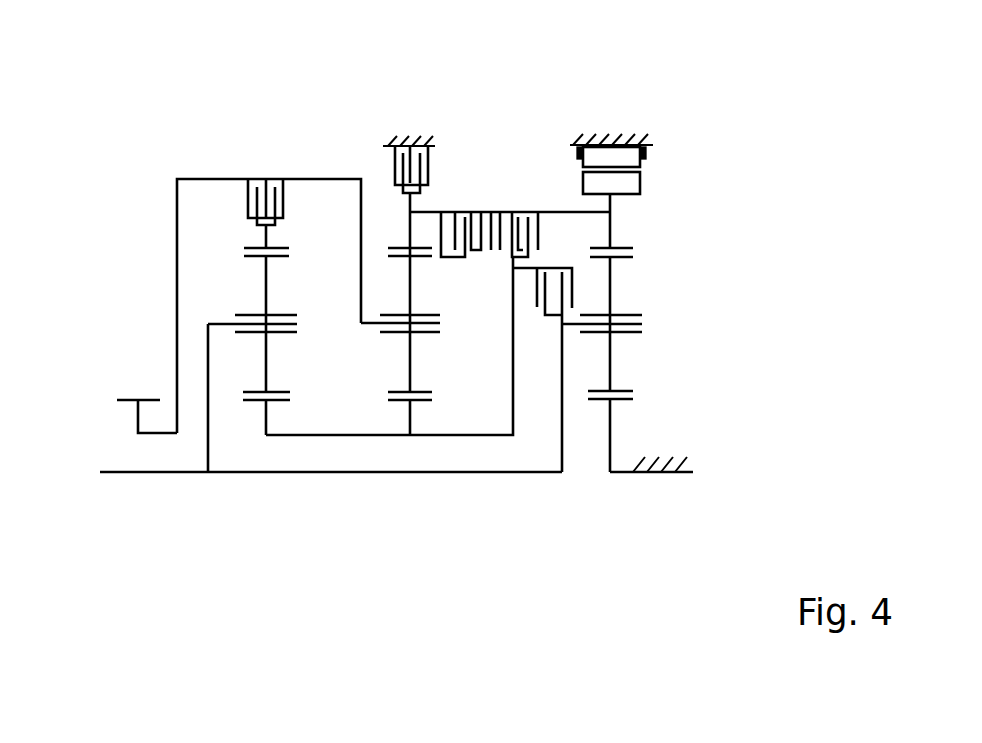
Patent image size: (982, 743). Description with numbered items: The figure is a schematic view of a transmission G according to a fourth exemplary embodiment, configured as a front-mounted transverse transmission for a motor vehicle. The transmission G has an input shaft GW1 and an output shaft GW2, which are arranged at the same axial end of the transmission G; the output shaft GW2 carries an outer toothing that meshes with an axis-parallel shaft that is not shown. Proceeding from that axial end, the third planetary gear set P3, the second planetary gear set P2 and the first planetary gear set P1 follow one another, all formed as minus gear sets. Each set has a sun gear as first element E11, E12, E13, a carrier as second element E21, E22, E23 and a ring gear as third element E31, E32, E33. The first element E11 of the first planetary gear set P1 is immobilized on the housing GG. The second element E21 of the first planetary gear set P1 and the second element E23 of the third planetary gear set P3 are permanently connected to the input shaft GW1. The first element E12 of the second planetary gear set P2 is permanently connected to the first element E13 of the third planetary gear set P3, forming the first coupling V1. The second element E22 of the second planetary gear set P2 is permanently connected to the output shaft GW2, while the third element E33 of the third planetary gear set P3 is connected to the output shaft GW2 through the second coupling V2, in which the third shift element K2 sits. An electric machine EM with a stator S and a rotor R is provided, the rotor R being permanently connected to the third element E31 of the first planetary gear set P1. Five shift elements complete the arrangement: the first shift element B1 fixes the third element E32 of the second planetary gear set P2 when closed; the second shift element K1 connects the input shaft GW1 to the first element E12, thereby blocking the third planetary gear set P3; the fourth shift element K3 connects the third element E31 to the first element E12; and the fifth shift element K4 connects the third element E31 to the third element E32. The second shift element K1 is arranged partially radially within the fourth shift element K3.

The transmission G is at (150, 215).
The housing GG is at (677, 470).
The input shaft GW1 is at (158, 476).
The output shaft GW2 is at (125, 398).
The first planetary gear set P1 is at (610, 480).
The second planetary gear set P2 is at (410, 478).
The third planetary gear set P3 is at (266, 478).
The first element of the first planetary gear set E11 is at (594, 404).
The first element of the second planetary gear set E12 is at (425, 405).
The first element of the third planetary gear set E13 is at (252, 405).
The second element of the first planetary gear set E21 is at (573, 327).
The second element of the second planetary gear set E22 is at (368, 328).
The second element of the third planetary gear set E23 is at (222, 320).
The third element of the first planetary gear set E31 is at (622, 247).
The third element of the second planetary gear set E32 is at (392, 240).
The third element of the third planetary gear set E33 is at (282, 247).
The second shift element K1 is at (578, 296).
The third shift element K2 is at (262, 174).
The fourth shift element K3 is at (523, 202).
The fifth shift element K4 is at (477, 200).
The first shift element B1 is at (438, 163).
The first coupling V1 is at (303, 437).
The second coupling V2 is at (258, 238).
The electric machine EM is at (701, 191).
The stator S is at (652, 157).
The rotor R is at (652, 183).